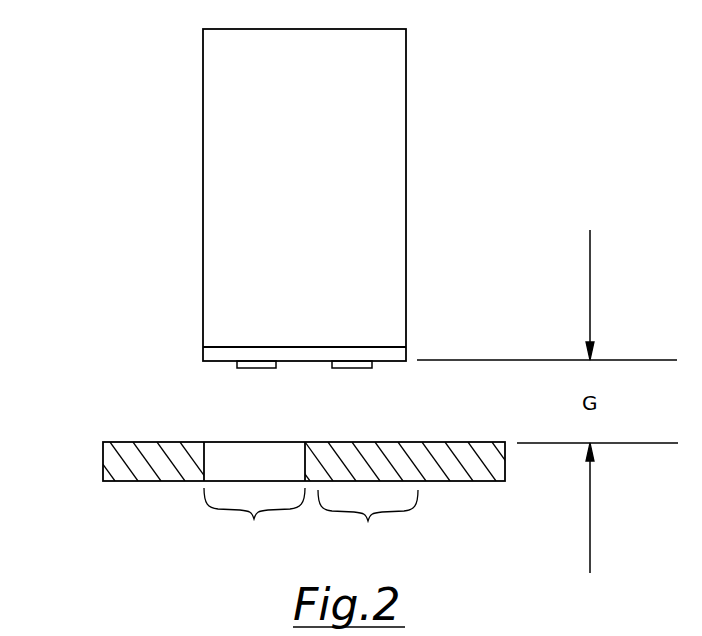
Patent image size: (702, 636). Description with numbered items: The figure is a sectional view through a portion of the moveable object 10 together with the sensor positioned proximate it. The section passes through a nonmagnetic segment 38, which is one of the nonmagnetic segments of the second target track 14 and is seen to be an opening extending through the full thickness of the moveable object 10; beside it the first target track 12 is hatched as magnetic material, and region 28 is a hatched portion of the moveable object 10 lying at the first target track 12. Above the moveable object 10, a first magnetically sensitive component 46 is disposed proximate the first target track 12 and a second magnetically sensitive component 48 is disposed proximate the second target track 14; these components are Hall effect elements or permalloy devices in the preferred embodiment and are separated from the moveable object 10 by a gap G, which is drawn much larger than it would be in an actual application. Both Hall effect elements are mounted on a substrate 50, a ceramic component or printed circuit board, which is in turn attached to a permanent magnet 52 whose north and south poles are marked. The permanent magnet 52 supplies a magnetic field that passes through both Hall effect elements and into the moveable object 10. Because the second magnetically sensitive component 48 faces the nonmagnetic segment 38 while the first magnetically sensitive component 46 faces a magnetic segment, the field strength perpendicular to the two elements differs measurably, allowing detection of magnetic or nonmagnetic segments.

The permanent magnet 52 is at (390, 161).
The substrate 50 is at (405, 352).
The second magnetically sensitive component 48 is at (253, 368).
The first magnetically sensitive component 46 is at (347, 368).
The moveable object 10 is at (142, 467).
The ferromagnetic segment of disk 28 is at (442, 447).
The nonmagnetic segment 38 is at (230, 455).
The second target track 14 is at (254, 519).
The first target track 12 is at (368, 521).